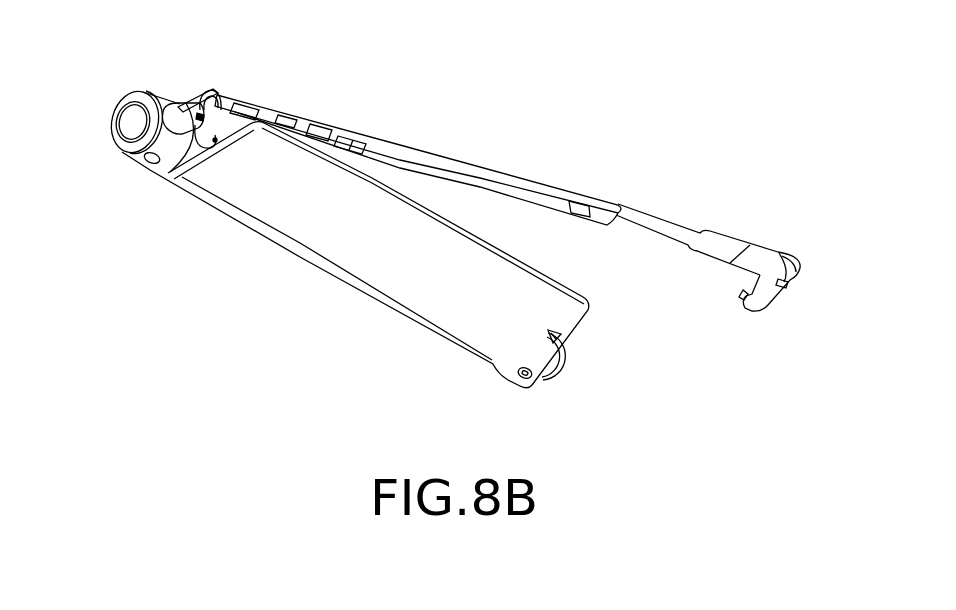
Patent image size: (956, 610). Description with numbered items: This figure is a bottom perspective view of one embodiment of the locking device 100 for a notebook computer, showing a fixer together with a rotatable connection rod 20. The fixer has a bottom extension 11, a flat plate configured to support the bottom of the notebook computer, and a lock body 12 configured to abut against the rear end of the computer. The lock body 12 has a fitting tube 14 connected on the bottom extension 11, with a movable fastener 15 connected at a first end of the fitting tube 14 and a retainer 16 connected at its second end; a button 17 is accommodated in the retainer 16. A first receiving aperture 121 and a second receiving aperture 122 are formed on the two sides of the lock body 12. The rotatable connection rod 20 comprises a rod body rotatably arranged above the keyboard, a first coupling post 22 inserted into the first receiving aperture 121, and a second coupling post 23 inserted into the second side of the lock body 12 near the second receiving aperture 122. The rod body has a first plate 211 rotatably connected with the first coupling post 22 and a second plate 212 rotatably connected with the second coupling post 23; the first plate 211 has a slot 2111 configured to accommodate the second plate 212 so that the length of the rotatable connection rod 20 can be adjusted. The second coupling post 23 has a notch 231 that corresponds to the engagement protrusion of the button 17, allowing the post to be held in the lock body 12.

The locking device 100 is at (733, 78).
The bottom extension 11 is at (373, 265).
The lock body 12 is at (140, 172).
The fitting tube 14 is at (212, 133).
The movable fastener 15 is at (128, 120).
The retainer 16 is at (540, 377).
The button 17 is at (563, 367).
The rotatable connection rod 20 is at (482, 156).
The first coupling post 22 is at (182, 110).
The second coupling post 23 is at (773, 297).
The first receiving aperture 121 is at (177, 110).
The second receiving aperture 122 is at (563, 335).
The first plate 211 is at (307, 130).
The second plate 212 is at (678, 237).
The notch 231 is at (743, 290).
The slot 2111 is at (305, 128).